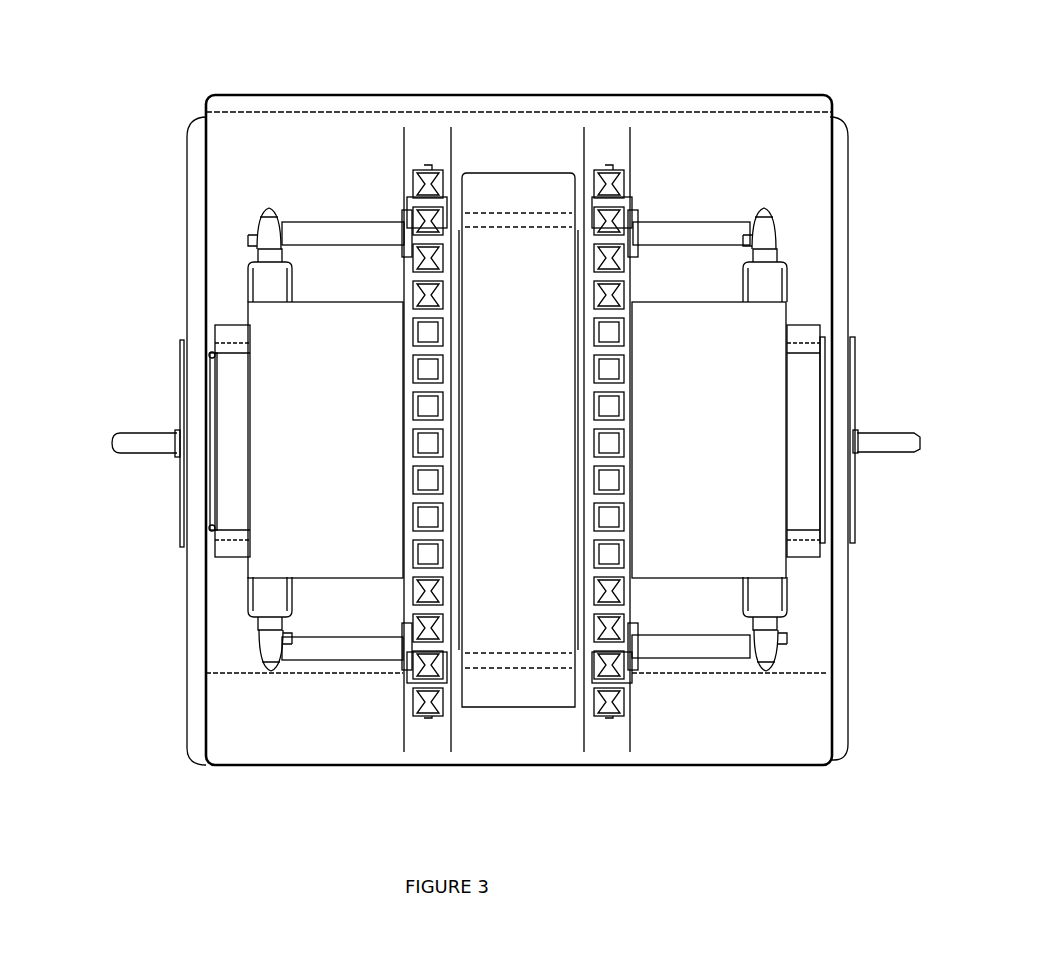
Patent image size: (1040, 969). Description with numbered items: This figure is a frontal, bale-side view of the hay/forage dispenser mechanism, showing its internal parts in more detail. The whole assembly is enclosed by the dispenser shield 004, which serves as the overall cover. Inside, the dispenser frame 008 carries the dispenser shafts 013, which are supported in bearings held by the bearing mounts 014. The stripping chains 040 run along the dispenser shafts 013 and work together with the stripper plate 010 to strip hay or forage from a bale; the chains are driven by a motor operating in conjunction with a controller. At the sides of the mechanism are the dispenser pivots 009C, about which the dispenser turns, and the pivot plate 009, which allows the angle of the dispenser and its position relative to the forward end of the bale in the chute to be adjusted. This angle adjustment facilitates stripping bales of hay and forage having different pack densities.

The dispenser shield 004 is at (272, 95).
The stripper plate 010 is at (515, 170).
The stripping chains 040 is at (620, 168).
The dispenser shafts 013 is at (710, 222).
The bearing mounts 014 is at (785, 262).
The dispenser frame 008 is at (828, 345).
The pivot plate 009 is at (854, 380).
The dispenser pivots 009C is at (885, 428).